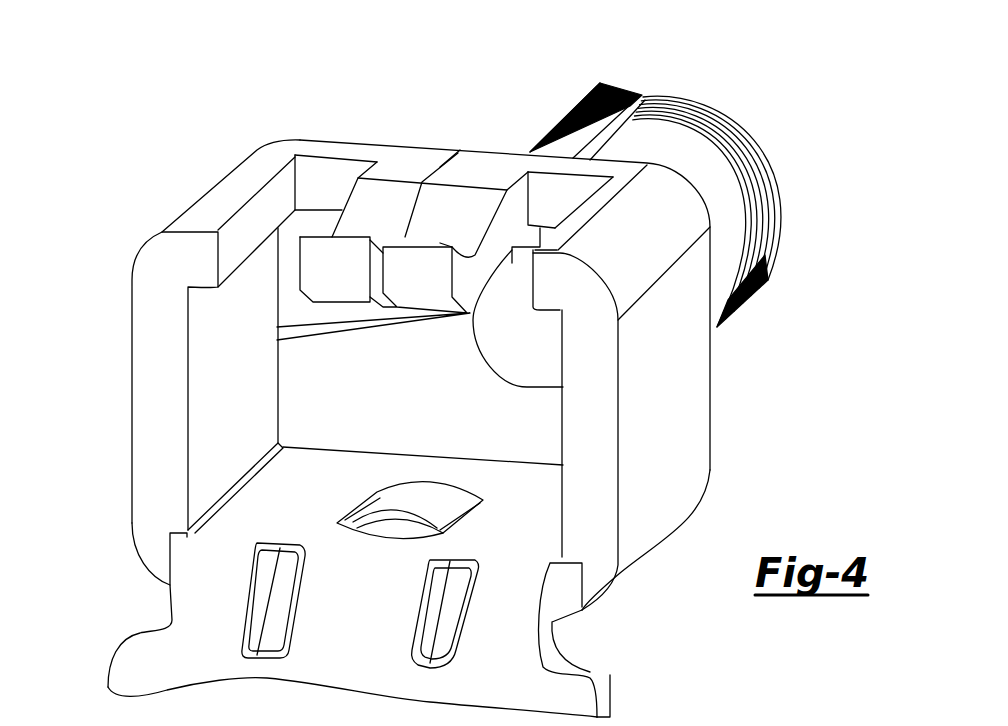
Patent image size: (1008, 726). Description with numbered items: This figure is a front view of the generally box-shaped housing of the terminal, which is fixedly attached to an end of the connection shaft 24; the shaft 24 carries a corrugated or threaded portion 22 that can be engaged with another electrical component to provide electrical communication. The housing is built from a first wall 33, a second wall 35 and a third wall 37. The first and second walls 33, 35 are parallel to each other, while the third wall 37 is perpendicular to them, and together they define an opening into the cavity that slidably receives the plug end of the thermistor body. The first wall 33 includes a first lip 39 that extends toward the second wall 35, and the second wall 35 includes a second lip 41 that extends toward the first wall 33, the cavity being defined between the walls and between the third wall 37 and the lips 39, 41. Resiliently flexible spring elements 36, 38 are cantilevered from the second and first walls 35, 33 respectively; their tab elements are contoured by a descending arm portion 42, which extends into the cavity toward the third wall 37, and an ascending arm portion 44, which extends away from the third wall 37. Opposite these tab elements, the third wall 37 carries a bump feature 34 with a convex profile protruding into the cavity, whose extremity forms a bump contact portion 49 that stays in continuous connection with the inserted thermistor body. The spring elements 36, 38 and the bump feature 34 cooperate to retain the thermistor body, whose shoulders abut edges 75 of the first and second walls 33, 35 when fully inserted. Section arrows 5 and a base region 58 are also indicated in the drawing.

The section line 5- 5 is at (115, 315).
The threaded portion 22 is at (693, 118).
The connection shaft 24 is at (600, 83).
The first wall 33 is at (247, 365).
The bump feature 34 is at (403, 460).
The second wall 35 is at (677, 440).
The first spring element 36 is at (507, 134).
The third wall 37 is at (267, 527).
The second spring element 38 is at (403, 130).
The first lip 39 is at (243, 220).
The second lip 41 is at (560, 290).
The descending arm portion 42 is at (453, 207).
The ascending arm portion 44 is at (413, 303).
The bump contact portion 49 is at (443, 490).
The base plate 58 is at (597, 687).
The edges 75 is at (153, 452).